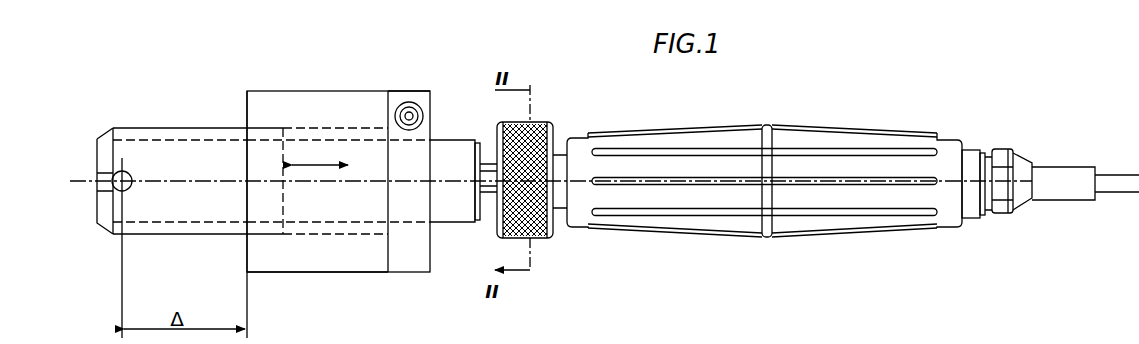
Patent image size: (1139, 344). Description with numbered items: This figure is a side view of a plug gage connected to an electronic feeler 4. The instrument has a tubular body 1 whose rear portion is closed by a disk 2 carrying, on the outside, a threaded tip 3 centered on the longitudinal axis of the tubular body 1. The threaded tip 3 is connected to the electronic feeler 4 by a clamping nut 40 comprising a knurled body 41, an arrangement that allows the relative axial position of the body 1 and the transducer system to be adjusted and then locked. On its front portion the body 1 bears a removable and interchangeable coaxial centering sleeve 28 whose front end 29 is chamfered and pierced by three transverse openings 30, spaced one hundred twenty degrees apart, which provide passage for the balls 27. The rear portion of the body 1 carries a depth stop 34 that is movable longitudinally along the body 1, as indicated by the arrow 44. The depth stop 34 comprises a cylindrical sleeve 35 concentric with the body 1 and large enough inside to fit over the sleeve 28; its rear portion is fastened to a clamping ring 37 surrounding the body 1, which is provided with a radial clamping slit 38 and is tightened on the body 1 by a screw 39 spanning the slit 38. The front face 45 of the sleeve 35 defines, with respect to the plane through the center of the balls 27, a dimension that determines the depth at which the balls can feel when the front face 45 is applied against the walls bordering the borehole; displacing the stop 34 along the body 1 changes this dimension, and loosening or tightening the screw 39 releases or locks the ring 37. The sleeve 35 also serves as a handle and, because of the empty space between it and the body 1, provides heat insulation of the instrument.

The tubular body 1 is at (440, 212).
The disk 2 is at (478, 143).
The threaded tip 3 is at (484, 220).
The electronic feeler 4 is at (760, 244).
The balls 27 is at (126, 190).
The centering sleeve 28 is at (158, 128).
The front end 29 is at (100, 132).
The transverse openings 30 is at (130, 177).
The depth stop 34 is at (285, 88).
The cylindrical sleeve 35 is at (310, 260).
The clamping ring 37 is at (398, 260).
The radial clamping slit 38 is at (412, 91).
The screw 39 is at (418, 108).
The clamping nut 40 is at (541, 121).
The knurled body 41 is at (549, 230).
The arrow 44 is at (320, 153).
The front face 45 is at (247, 108).